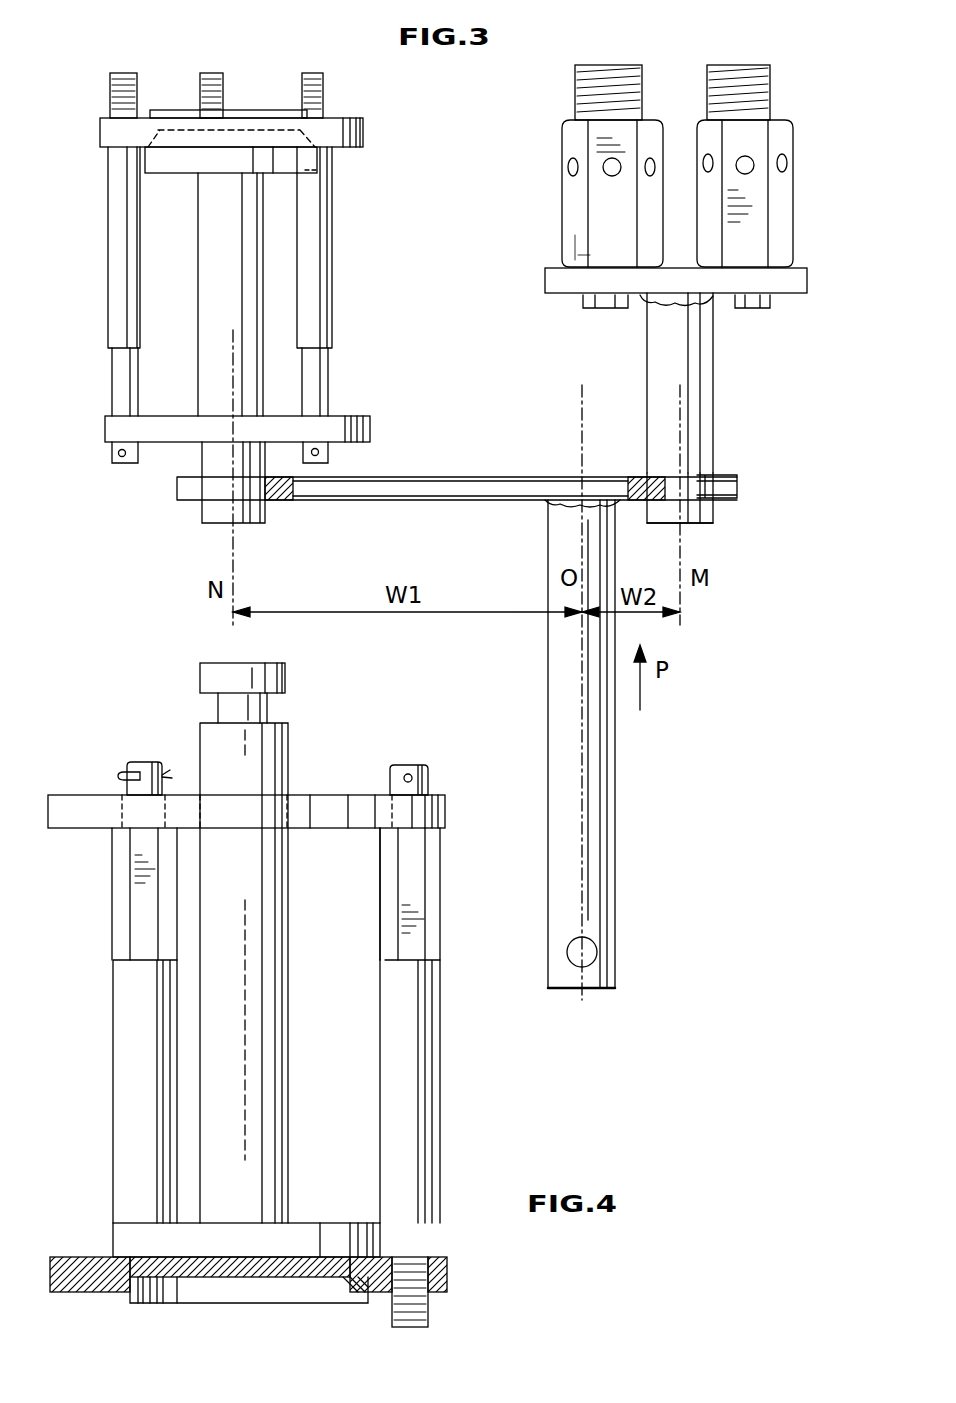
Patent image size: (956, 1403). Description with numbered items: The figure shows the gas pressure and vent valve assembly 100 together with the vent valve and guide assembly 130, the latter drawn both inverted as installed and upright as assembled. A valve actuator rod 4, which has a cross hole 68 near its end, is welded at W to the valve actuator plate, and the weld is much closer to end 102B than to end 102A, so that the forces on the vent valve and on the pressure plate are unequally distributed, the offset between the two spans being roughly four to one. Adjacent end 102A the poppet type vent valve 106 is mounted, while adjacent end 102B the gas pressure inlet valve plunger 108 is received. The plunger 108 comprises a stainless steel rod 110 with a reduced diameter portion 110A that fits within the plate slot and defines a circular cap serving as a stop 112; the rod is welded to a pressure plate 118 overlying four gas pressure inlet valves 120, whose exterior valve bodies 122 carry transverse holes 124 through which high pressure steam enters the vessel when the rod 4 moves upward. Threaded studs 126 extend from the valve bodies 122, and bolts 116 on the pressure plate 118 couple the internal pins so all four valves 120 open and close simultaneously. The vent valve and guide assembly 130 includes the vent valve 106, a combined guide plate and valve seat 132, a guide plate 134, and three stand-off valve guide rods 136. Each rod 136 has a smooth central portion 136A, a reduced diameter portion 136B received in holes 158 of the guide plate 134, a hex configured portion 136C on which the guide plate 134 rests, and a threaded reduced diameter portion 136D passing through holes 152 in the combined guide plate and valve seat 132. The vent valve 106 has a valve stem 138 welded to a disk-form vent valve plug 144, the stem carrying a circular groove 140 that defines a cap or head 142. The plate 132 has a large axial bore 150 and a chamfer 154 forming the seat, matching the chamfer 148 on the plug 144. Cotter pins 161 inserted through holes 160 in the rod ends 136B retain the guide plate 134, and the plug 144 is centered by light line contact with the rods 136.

In FIG. 3, the valve actuator rod 4 is at (600, 848).
In FIG. 3, the hole 68 is at (583, 950).
In FIG. 3, the gas pressure and vent valve assembly 100 is at (745, 608).
In FIG. 3, the end of valve actuator plate 102A is at (185, 497).
In FIG. 3, the end of valve actuator plate 102B is at (738, 495).
In FIG. 3, the poppet type vent valve 106 is at (270, 310).
In FIG. 4, the poppet type vent valve 106 is at (290, 1000).
In FIG. 3, the gas pressure inlet valve plunger 108 is at (717, 410).
In FIG. 3, the stainless steel rod 110 is at (703, 447).
In FIG. 3, the reduced diameter portion 110A is at (712, 478).
In FIG. 3, the stop 112 is at (705, 525).
In FIG. 3, the bolts 116 is at (605, 310).
In FIG. 3, the mounting plate 118 is at (676, 280).
In FIG. 3, the gas pressure inlet valves 120 is at (700, 198).
In FIG. 3, the valve bodies 122 is at (600, 237).
In FIG. 3, the transverse holes 124 is at (788, 152).
In FIG. 3, the threaded studs 126 is at (715, 90).
In FIG. 3, the vent valve and guide assembly 130 is at (283, 442).
In FIG. 4, the vent valve and guide assembly 130 is at (495, 928).
In FIG. 3, the combined guide plate and valve seat 132 is at (100, 125).
In FIG. 4, the combined guide plate and valve seat 132 is at (95, 1278).
In FIG. 3, the guide plate 134 is at (355, 435).
In FIG. 4, the guide plate 134 is at (445, 832).
In FIG. 3, the stand-off valve guide rods 136 is at (335, 330).
In FIG. 4, the stand-off valve guide rods 136 is at (445, 1062).
In FIG. 3, the central portion 136A is at (118, 290).
In FIG. 4, the central portion 136A is at (138, 1050).
In FIG. 3, the reduced diameter portion 136B is at (330, 458).
In FIG. 3, the hex configured portion 136C is at (316, 382).
In FIG. 4, the hex configured portion 136C is at (130, 922).
In FIG. 3, the threaded reduced diameter portion 136D is at (265, 66).
In FIG. 4, the threaded reduced diameter portion 136D is at (428, 1312).
In FIG. 3, the valve stem 138 is at (246, 253).
In FIG. 4, the circular groove 140 is at (267, 716).
In FIG. 4, the cap or head 142 is at (285, 683).
In FIG. 3, the vent valve plug 144 is at (290, 153).
In FIG. 4, the vent valve plug 144 is at (185, 1237).
In FIG. 4, the chamfer 148 is at (212, 1283).
In FIG. 4, the axial bore 150 is at (355, 1287).
In FIG. 4, the circular holes 152 is at (447, 1268).
In FIG. 4, the chamfer 154 is at (348, 1225).
In FIG. 4, the holes 158 is at (390, 790).
In FIG. 3, the holes 160 is at (123, 463).
In FIG. 4, the holes 160 is at (415, 778).
In FIG. 4, the cotter pins 161 is at (135, 775).
In FIG. 3, the weld W is at (655, 310).